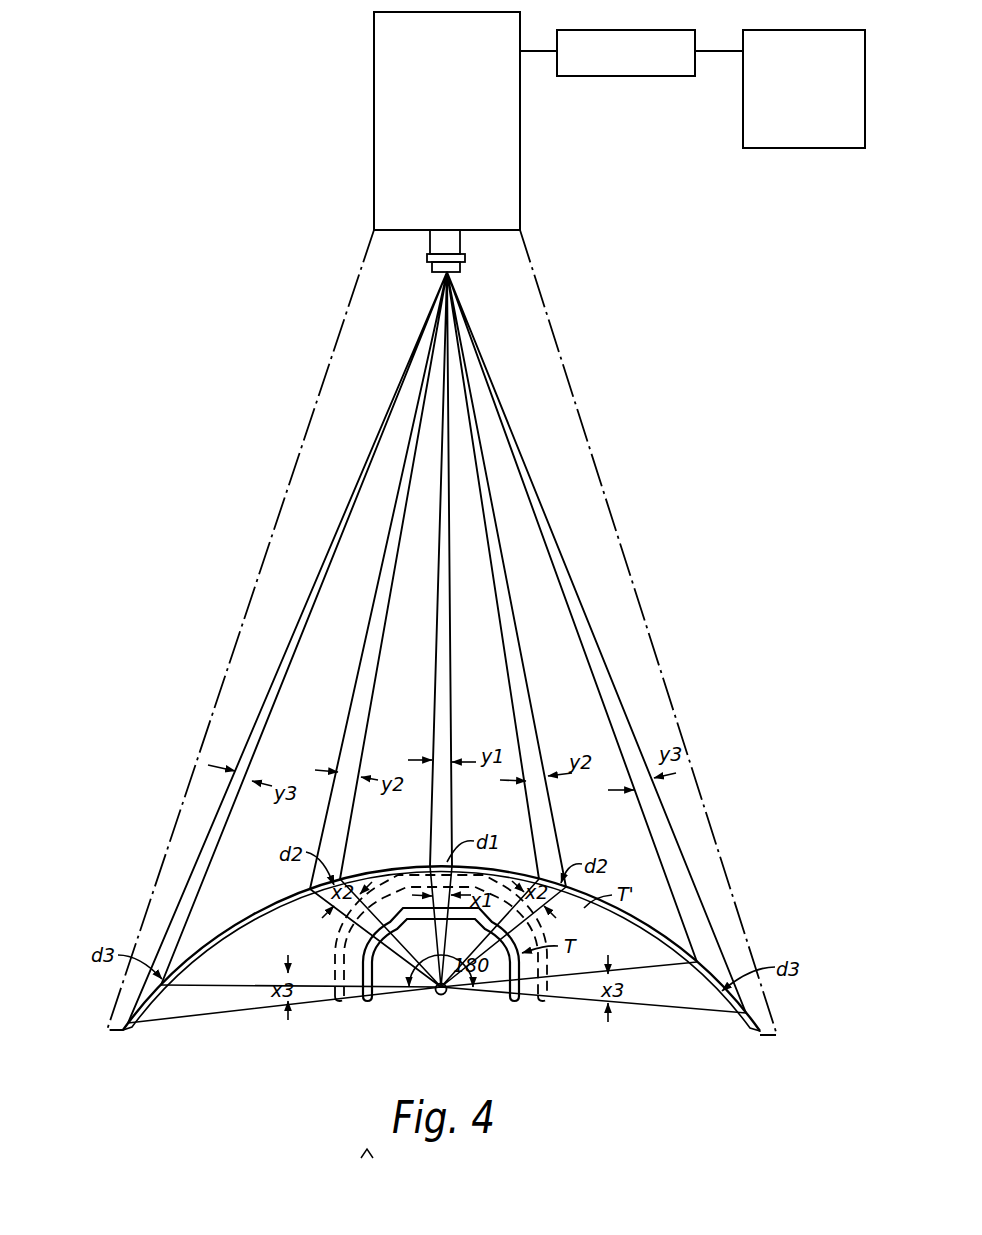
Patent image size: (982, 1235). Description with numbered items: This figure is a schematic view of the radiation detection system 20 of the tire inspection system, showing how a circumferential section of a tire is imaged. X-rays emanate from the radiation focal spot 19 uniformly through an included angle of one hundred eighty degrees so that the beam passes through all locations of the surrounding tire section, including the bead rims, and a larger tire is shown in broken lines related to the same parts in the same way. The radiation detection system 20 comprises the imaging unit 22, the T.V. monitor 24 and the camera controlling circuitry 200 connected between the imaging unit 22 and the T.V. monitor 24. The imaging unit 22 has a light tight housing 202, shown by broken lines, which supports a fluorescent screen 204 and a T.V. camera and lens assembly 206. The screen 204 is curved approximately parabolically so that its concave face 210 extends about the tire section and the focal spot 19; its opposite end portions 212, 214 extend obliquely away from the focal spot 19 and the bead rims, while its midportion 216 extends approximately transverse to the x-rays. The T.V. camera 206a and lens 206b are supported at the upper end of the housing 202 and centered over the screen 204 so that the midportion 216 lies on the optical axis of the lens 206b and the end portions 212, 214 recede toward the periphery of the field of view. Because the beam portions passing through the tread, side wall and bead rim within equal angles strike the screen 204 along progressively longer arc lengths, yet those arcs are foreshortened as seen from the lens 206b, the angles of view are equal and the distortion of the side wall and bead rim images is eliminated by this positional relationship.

The radiation focal spot 19 is at (450, 998).
The radiation detection system 20 is at (245, 322).
The imaging unit 22 is at (532, 257).
The T.V. monitor 24 is at (808, 150).
The camera controlling circuitry 200 is at (617, 30).
The light tight housing 202 is at (583, 410).
The fluorescent screen 204 is at (670, 936).
The T.V. camera and lens assembly 206 is at (374, 200).
The T.V. camera 206a is at (503, 193).
The lens 206b is at (456, 275).
The concave face 210 is at (244, 922).
The end portion of the screen 212 is at (140, 1022).
The end portion of the screen 214 is at (768, 1030).
The midportion of the screen 216 is at (493, 864).